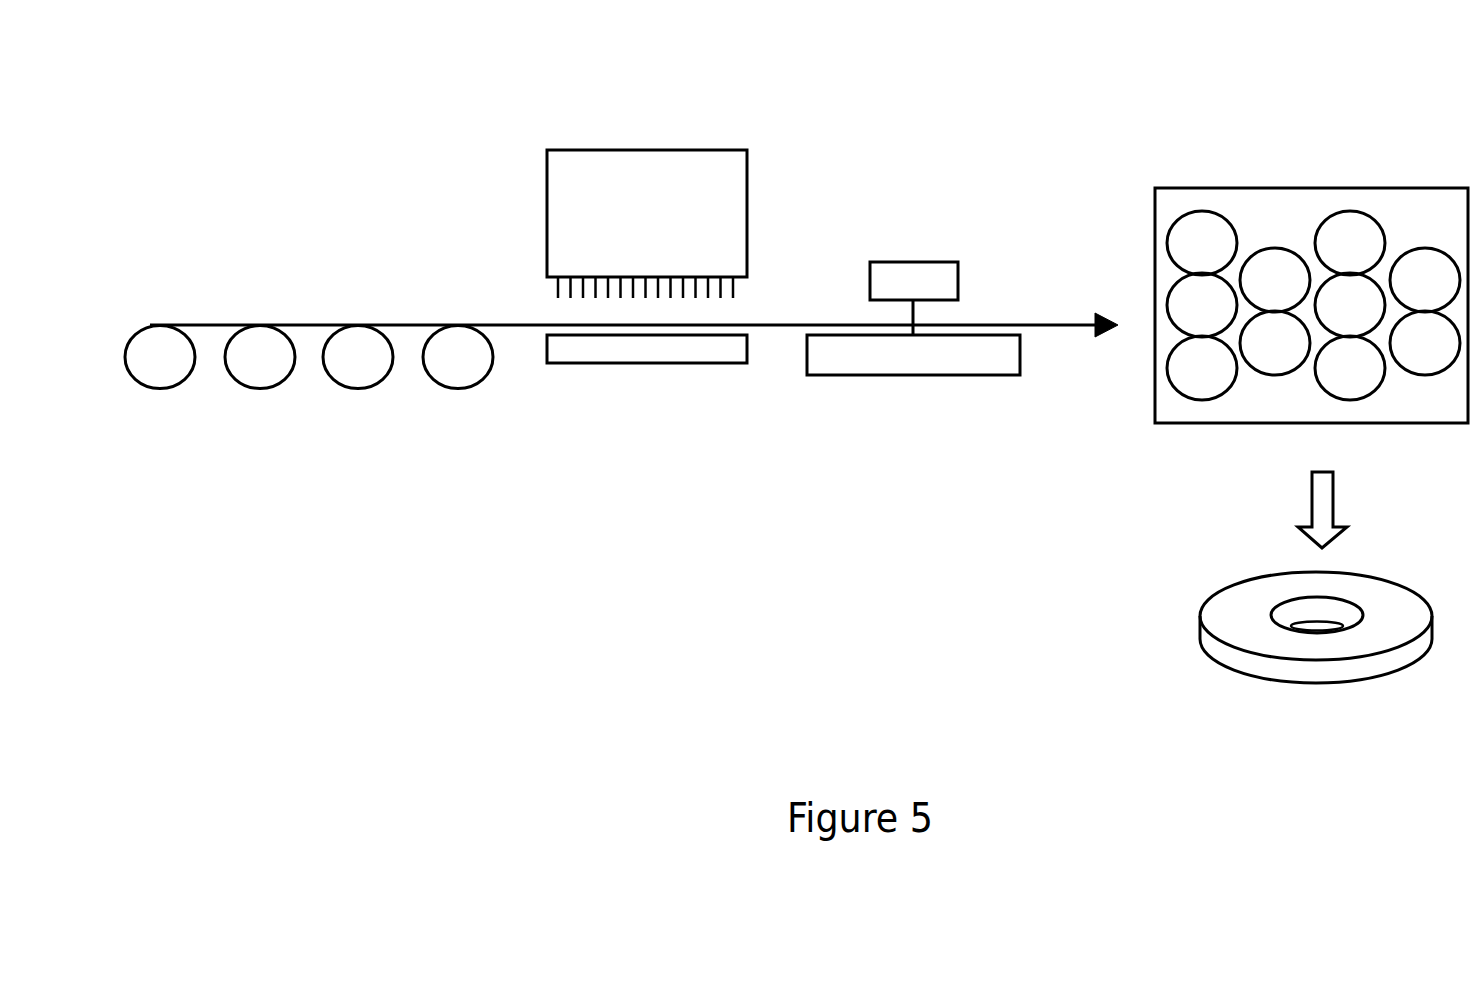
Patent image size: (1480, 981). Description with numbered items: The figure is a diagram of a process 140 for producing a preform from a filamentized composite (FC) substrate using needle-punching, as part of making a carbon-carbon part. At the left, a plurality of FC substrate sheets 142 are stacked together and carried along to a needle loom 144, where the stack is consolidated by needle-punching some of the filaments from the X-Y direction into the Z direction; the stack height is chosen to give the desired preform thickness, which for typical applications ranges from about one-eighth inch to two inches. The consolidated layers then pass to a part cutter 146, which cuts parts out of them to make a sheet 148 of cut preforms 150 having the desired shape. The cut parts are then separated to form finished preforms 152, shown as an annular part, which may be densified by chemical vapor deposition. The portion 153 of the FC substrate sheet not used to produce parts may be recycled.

The process 140 is at (485, 108).
The FC substrate sheets 142 is at (263, 325).
The needle loom 144 is at (583, 150).
The part cutter 146 is at (895, 262).
The sheet of cut preforms 148 is at (1343, 188).
The cut preforms 150 is at (1343, 237).
The finished preforms 152 is at (1242, 608).
The portion of the FC substrate sheet 153 is at (1430, 398).